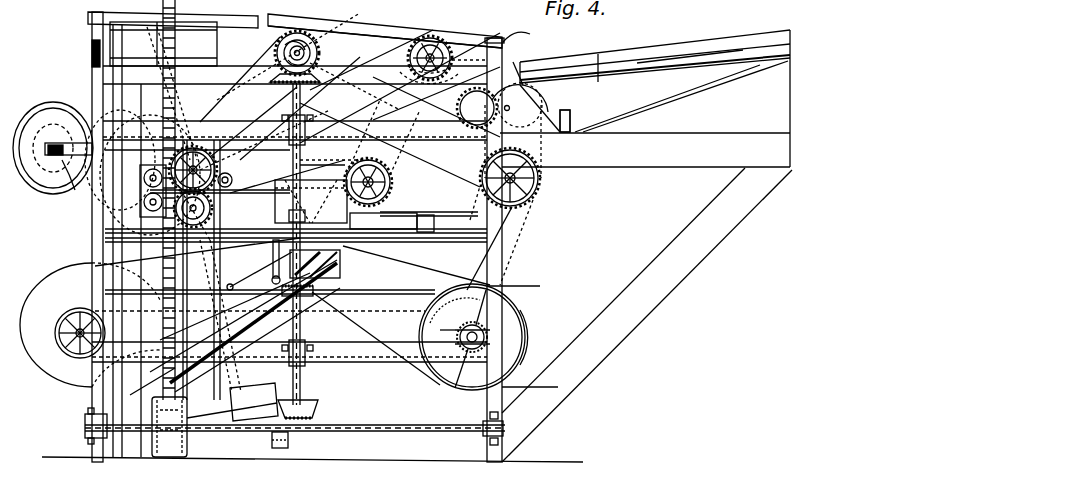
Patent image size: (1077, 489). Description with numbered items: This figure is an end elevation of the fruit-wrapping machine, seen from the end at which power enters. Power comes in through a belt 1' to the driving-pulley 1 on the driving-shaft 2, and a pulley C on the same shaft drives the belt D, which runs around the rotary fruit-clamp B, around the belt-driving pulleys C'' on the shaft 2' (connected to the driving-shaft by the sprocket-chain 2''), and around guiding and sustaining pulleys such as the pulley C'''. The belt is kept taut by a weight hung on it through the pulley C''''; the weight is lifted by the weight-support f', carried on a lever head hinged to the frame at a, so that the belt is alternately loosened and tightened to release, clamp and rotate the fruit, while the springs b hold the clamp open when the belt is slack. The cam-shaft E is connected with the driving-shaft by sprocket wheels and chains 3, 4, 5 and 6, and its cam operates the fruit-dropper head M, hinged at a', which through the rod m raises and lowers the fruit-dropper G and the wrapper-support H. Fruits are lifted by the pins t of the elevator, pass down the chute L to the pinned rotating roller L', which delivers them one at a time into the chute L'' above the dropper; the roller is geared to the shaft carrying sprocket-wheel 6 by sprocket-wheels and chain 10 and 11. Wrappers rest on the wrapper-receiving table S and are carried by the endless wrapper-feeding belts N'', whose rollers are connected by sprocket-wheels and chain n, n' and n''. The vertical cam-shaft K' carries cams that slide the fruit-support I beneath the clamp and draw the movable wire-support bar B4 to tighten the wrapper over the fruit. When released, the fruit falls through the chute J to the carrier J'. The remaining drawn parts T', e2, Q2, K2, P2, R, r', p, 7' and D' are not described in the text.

The pins t is at (176, 44).
The belt T' is at (162, 93).
The pulley e2 is at (275, 50).
The cam-shaft E is at (298, 53).
The fruit-dropper head M is at (362, 30).
The pulley Q2 is at (372, 45).
The bearing / vertical shaft K2 is at (322, 77).
The belt P2 is at (280, 112).
The rod m is at (306, 110).
The sprocket-wheels and chain n'' is at (217, 140).
The reel R is at (53, 148).
The reel arm r' is at (71, 185).
The endless wrapper-feeding belts N'' is at (215, 170).
The gear p is at (193, 210).
The wrapper-receiving table S is at (185, 191).
The wrapper-support H is at (268, 217).
The sprocket-wheels and chain n is at (287, 186).
The chute L'' is at (382, 153).
The fruit-dropping device G is at (335, 151).
The sprocket-wheels and chain n' is at (339, 157).
The belt 7' is at (461, 201).
The movable wire-support bar B4 is at (433, 214).
The sprocket-wheels and chain 10 is at (502, 105).
The hinge a is at (516, 39).
The hinge a' is at (469, 58).
The rotating roller L' is at (516, 67).
The chute L is at (655, 62).
The sprocket-wheels and chain 11 is at (533, 70).
The springs b is at (535, 108).
The sprocket-wheel 6 is at (540, 180).
The sprocket wheels and chains 4 is at (530, 235).
The sprocket wheels and chains 5 is at (493, 248).
The belt D is at (90, 321).
The belt-driving pulleys C'' is at (72, 332).
The shaft 2' is at (231, 332).
The belt D' is at (292, 263).
The sprocket-chain 2'' is at (376, 338).
The vertical cam-shaft K' is at (270, 311).
The fruit-support I is at (315, 268).
The fruit-clamp B is at (340, 255).
The guiding and sustaining pulley C''' is at (235, 296).
The pulley C'''' is at (241, 330).
The chute J is at (235, 327).
The carrier J' is at (178, 427).
The weight-support f' is at (295, 426).
The pulley C is at (472, 337).
The driving-pulley 1 is at (528, 340).
The driving-shaft 2 is at (496, 329).
The sprocket wheels and chains 3 is at (480, 330).
The belt 1' is at (527, 297).